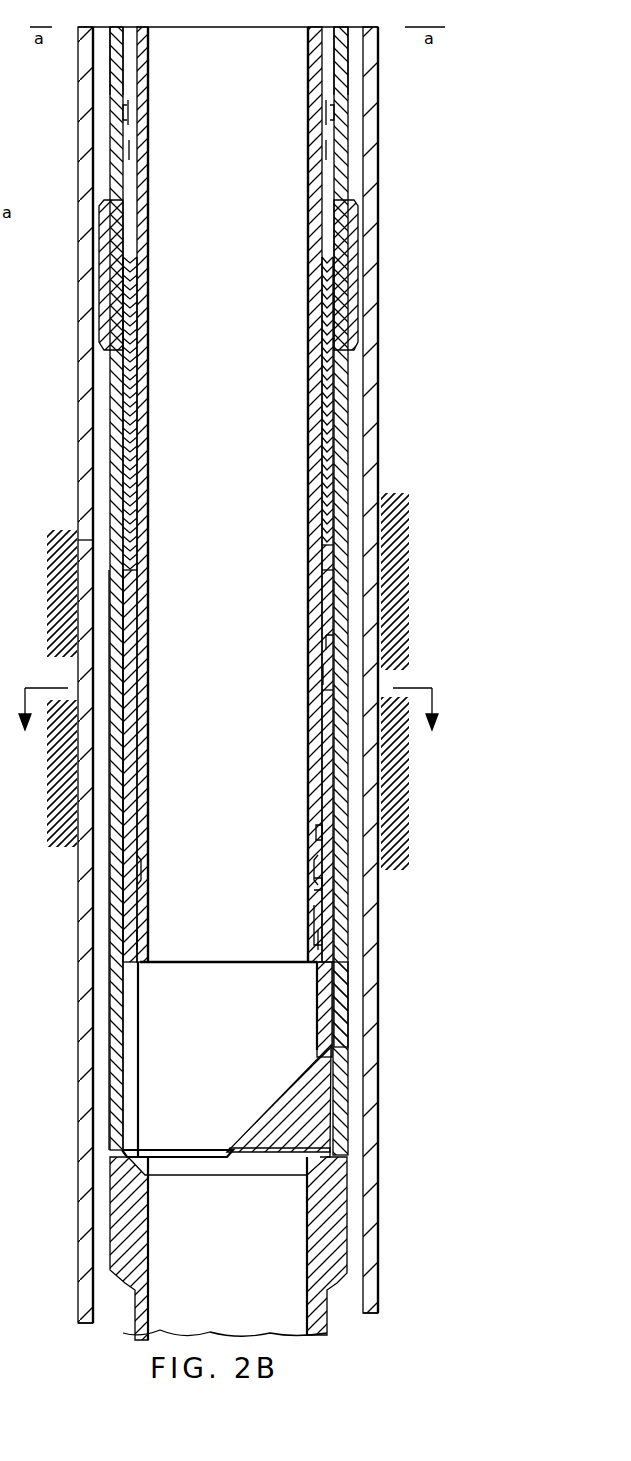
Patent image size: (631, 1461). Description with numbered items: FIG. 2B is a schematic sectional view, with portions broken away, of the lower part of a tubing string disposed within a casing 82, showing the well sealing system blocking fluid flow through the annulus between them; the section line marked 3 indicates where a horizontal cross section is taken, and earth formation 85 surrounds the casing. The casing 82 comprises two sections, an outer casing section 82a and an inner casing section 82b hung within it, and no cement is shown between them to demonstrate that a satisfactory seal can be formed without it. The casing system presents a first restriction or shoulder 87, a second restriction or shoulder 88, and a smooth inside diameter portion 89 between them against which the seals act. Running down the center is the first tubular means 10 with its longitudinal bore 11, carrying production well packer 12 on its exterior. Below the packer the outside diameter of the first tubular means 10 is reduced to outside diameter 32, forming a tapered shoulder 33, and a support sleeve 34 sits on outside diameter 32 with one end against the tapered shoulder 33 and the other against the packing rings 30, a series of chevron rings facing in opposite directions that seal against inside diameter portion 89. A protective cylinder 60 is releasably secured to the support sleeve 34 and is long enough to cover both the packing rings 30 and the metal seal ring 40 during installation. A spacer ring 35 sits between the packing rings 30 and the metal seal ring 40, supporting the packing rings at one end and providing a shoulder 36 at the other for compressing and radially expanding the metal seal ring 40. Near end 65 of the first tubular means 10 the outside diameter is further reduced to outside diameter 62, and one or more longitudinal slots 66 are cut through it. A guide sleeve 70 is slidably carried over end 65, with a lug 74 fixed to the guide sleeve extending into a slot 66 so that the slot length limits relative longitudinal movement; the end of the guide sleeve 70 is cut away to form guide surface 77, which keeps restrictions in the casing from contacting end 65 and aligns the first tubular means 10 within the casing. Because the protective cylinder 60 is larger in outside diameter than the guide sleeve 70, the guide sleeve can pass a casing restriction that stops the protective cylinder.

The casing 82 is at (95, 1330).
The casing section 82a is at (92, 412).
The casing section 82b is at (345, 1102).
The production well packer 12 is at (0, 532).
The protective cylinder 60 is at (117, 70).
The second restriction or shoulder 88 is at (118, 206).
The longitudinal bore 11 is at (226, 408).
The packing rings 30 is at (328, 300).
The tapered shoulder 33 is at (330, 122).
The support sleeve 34 is at (330, 164).
The first tubular means 10 is at (310, 760).
The spacer ring 35 is at (328, 582).
The shoulder 36 is at (328, 640).
The metal seal ring 40 is at (326, 672).
The outside diameter 32 is at (324, 700).
The inside diameter portion 89 is at (320, 724).
The reduced outside diameter 62 is at (318, 835).
The lug 74 is at (318, 882).
The longitudinal slot 66 is at (318, 916).
The end 65 is at (318, 964).
The guide sleeve 70 is at (322, 1020).
The guide surface 77 is at (282, 1096).
The first restriction or shoulder 87 is at (150, 1172).
The earth formation 85 is at (70, 538).
The section line 3 is at (228, 722).